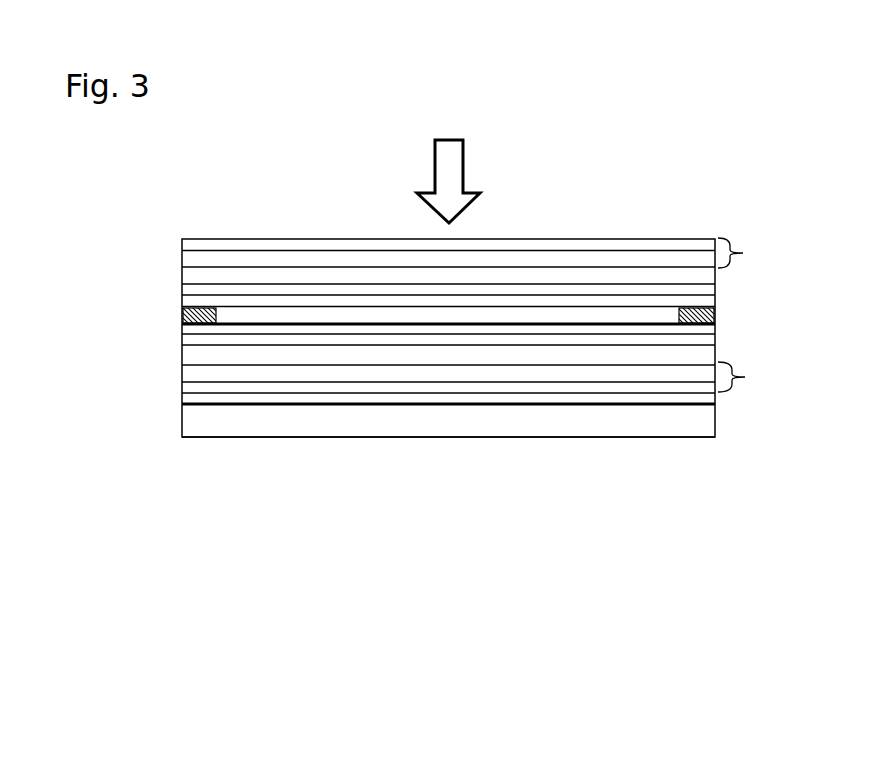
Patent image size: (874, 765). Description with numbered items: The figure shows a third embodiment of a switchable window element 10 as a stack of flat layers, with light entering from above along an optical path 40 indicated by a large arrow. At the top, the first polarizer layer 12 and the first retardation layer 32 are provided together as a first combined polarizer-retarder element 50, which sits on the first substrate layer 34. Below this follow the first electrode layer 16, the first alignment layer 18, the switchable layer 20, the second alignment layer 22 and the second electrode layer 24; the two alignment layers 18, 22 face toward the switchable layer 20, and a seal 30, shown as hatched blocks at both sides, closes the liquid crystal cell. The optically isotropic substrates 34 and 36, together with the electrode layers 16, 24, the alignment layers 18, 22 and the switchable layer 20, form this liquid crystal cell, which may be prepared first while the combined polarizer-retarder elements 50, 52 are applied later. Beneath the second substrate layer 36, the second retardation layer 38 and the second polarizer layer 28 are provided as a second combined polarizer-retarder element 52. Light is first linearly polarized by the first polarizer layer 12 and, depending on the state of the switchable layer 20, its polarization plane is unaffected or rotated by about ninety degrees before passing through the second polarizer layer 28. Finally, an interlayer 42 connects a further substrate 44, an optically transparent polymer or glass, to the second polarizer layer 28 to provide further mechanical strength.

The switchable window element 10 is at (712, 198).
The first polarizer layer 12 is at (711, 238).
The first electrode layer 16 is at (712, 290).
The first alignment layer 18 is at (196, 302).
The switchable layer 20 is at (225, 313).
The second alignment layer 22 is at (207, 329).
The second electrode layer 24 is at (707, 342).
The second polarizer layer 28 is at (715, 388).
The seal 30 is at (716, 317).
The first retardation layer 32 is at (202, 260).
The first substrate layer 34 is at (196, 278).
The second substrate layer 36 is at (205, 359).
The second retardation layer 38 is at (208, 375).
The optical path 40 is at (452, 168).
The interlayer 42 is at (700, 400).
The further substrate 44 is at (220, 420).
The first combined polarizer-retarder element 50 is at (751, 253).
The second combined polarizer-retarder element 52 is at (749, 377).